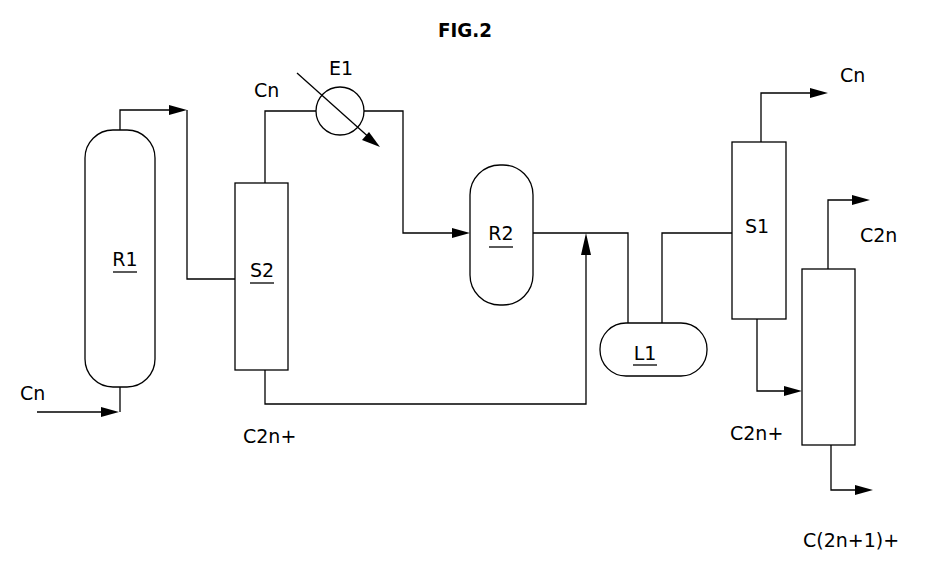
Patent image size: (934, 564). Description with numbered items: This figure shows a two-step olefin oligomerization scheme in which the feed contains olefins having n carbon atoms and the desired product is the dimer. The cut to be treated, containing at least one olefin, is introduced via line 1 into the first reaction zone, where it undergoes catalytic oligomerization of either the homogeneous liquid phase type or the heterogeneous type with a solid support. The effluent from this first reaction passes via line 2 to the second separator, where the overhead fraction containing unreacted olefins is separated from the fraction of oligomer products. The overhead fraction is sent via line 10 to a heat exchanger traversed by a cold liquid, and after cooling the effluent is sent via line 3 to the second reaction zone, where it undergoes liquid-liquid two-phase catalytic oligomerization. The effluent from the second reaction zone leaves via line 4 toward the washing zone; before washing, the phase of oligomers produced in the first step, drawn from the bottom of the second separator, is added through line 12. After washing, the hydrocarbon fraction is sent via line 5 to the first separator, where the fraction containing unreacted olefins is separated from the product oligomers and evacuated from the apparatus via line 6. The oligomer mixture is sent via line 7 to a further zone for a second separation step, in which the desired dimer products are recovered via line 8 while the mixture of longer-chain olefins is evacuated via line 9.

The line 1 is at (76, 414).
The R1 effluent line to separator S2 2 is at (138, 110).
The line 3 is at (403, 178).
The R2 effluent line to L1 4 is at (565, 233).
The line 5 is at (690, 233).
The line 6 is at (771, 93).
The line 7 is at (757, 378).
The line 8 is at (828, 200).
The line 9 is at (835, 488).
The line 10 is at (265, 160).
The line 12 is at (500, 405).